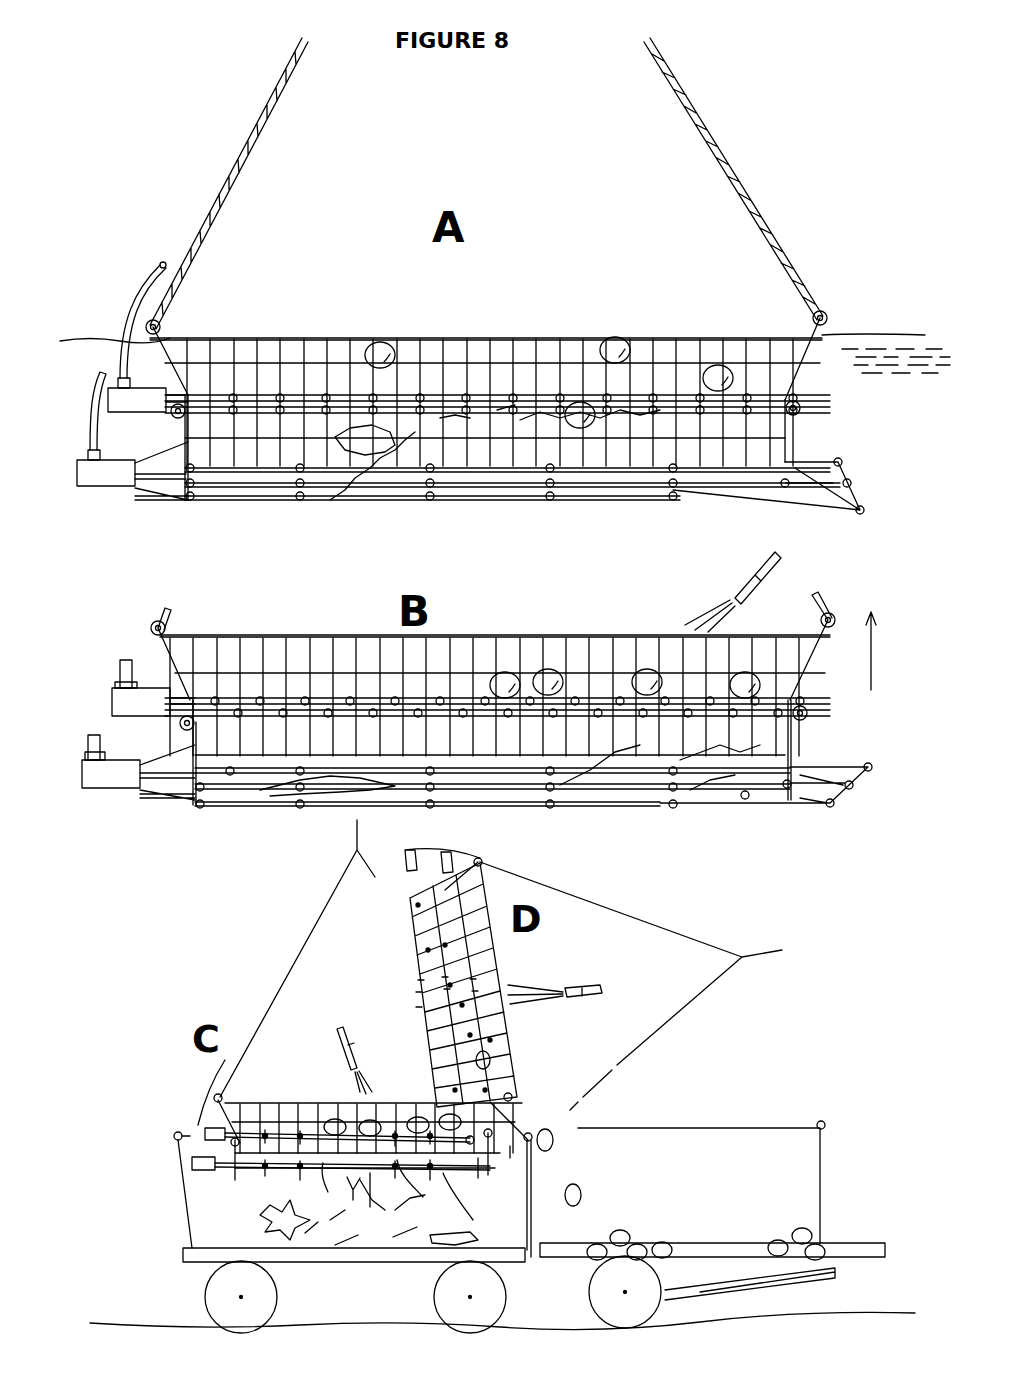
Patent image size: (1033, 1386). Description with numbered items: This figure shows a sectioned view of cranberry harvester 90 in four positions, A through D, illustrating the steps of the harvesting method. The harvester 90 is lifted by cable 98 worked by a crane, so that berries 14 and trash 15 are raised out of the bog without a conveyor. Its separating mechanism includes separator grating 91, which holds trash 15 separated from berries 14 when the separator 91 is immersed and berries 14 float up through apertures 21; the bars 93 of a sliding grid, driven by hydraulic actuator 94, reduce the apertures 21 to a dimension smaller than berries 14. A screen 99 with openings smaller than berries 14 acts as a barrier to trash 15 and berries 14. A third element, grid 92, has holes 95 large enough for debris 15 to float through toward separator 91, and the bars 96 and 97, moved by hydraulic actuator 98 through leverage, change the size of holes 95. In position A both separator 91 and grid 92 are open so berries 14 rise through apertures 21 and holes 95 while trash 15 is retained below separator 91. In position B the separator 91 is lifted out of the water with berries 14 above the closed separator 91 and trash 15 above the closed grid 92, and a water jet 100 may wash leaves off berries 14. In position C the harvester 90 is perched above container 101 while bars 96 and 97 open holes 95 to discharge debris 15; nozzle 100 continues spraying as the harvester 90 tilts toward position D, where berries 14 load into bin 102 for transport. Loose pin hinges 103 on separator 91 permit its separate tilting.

The berries 14 is at (612, 350).
The trash 15 is at (332, 503).
The apertures 21 is at (285, 400).
The cranberry harvester 90 is at (337, 335).
The separator grating 91 is at (760, 403).
The grid 92 is at (300, 486).
The bars of sliding grid 93 is at (500, 395).
The hydraulic actuator 94 is at (118, 372).
The holes 95 is at (532, 494).
The bar 96 is at (432, 497).
The bar 97 is at (415, 433).
The cable / hydraulic actuator 98 is at (98, 796).
The screen 99 is at (695, 345).
The water jet 100 is at (722, 590).
The container 101 is at (207, 1205).
The bin 102 is at (752, 1152).
The loose pin hinges 103 is at (178, 414).